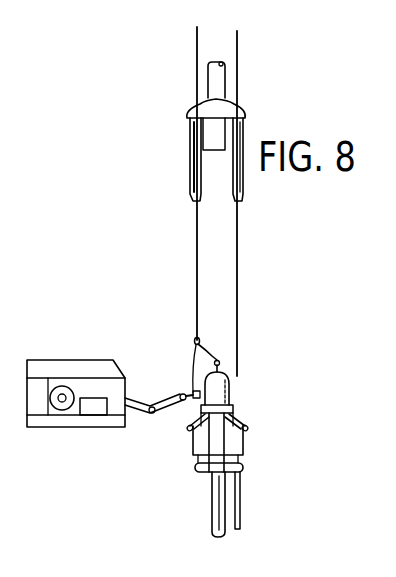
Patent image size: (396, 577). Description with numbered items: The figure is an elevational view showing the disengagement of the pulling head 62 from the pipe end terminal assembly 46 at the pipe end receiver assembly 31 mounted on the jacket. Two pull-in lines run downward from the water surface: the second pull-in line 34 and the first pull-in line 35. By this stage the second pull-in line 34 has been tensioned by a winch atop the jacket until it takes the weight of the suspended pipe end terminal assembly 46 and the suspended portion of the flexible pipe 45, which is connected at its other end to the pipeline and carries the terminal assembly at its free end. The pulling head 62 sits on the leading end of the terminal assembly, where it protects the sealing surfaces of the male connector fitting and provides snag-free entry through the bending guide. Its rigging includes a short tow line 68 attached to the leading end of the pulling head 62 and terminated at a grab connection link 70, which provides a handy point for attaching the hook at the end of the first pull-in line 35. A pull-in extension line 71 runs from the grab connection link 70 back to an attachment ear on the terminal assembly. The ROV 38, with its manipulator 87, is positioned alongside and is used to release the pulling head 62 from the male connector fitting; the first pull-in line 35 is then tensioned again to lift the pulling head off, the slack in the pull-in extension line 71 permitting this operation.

The pipe end receiver assembly 31 is at (178, 113).
The second pull-in line 34 is at (238, 269).
The first pull-in line 35 is at (196, 278).
The ROV 38 is at (103, 360).
The flexible pipe 45 is at (212, 510).
The pipe end terminal assembly 46 is at (255, 445).
The pulling head 62 is at (231, 378).
The tow line 68 is at (207, 352).
The grab connection link 70 is at (194, 339).
The pull-in extension line 71 is at (192, 377).
The manipulator 87 is at (142, 414).